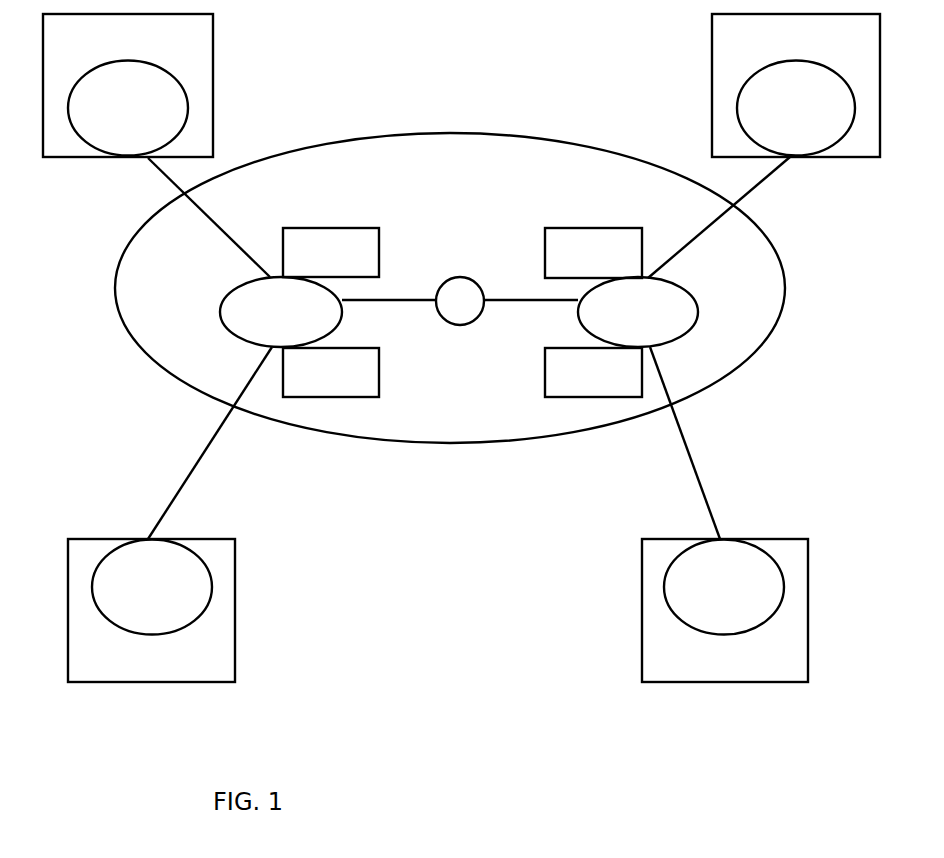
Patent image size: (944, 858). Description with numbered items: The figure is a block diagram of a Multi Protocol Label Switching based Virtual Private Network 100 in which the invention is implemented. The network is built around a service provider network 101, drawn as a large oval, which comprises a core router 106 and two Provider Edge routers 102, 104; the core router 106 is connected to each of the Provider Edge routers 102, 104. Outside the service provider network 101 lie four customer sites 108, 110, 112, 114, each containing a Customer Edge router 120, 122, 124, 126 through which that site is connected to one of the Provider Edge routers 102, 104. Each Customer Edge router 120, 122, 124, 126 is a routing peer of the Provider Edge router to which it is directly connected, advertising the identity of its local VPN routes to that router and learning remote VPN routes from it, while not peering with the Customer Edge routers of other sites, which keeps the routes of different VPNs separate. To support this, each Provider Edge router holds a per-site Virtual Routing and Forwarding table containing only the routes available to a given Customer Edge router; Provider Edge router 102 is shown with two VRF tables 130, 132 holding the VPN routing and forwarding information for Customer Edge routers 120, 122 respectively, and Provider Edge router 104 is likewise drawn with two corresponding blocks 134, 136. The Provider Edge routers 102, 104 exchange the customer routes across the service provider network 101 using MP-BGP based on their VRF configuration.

The MPLS based Virtual Private Network 100 is at (530, 802).
The service provider network 101 is at (425, 133).
The Provider Edge router 102 is at (281, 312).
The Provider Edge router 104 is at (638, 312).
The core router 106 is at (460, 277).
The customer site 108 is at (128, 85).
The customer site 110 is at (151, 610).
The customer site 112 is at (796, 85).
The customer site 114 is at (725, 610).
The Customer Edge router 120 is at (128, 108).
The Customer Edge router 122 is at (152, 587).
The Customer Edge router 124 is at (796, 108).
The Customer Edge router 126 is at (724, 587).
The VRF table 130 is at (331, 252).
The VRF table 132 is at (331, 372).
The first module of second node 134 is at (593, 253).
The second module of second node 136 is at (593, 372).